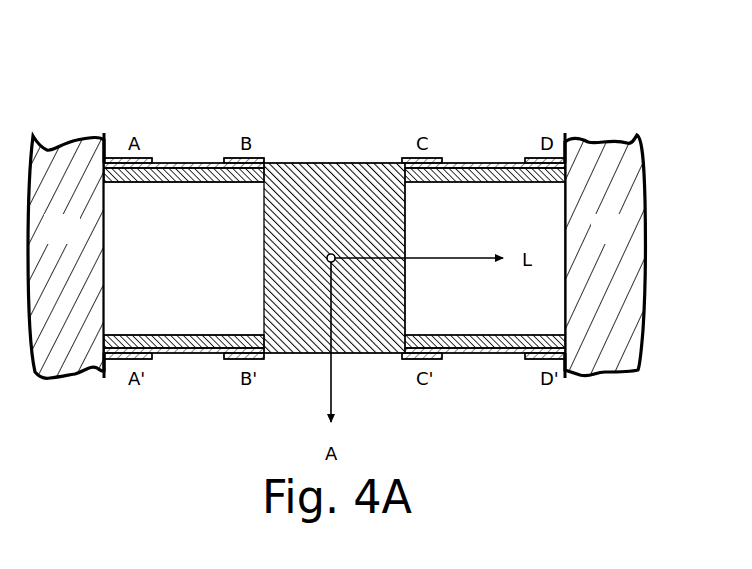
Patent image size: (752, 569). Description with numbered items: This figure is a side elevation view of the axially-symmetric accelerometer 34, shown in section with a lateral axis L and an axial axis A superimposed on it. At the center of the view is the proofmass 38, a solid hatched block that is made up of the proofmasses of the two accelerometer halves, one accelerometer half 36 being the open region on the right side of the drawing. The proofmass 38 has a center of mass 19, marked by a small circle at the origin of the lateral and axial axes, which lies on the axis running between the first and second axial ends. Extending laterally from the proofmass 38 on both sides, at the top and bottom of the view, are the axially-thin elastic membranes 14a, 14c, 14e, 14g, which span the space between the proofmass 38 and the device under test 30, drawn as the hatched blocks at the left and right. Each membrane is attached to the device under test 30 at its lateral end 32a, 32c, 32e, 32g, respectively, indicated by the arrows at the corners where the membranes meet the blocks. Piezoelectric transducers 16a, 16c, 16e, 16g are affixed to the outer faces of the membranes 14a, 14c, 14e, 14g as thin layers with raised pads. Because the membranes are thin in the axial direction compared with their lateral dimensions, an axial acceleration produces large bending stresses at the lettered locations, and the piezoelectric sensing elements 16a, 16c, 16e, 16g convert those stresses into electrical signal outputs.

The device under test 30 is at (75, 243).
The axially-symmetric accelerometer 34 is at (308, 122).
The axially-thin elastic membrane 14a is at (162, 183).
The axially-thin elastic membrane 14c is at (519, 176).
The axially-thin elastic membrane 14e is at (212, 337).
The axially-thin elastic membrane 14g is at (478, 338).
The piezoelectric transducer 16a is at (187, 163).
The piezoelectric transducer 16c is at (495, 163).
The piezoelectric transducer 16e is at (195, 356).
The piezoelectric transducer 16g is at (497, 358).
The proofmass 38 is at (283, 233).
The accelerometer half 36 is at (390, 213).
The center of mass 19 is at (332, 253).
The lateral end 32a is at (123, 122).
The lateral end 32c is at (557, 118).
The lateral end 32e is at (117, 376).
The lateral end 32g is at (563, 390).